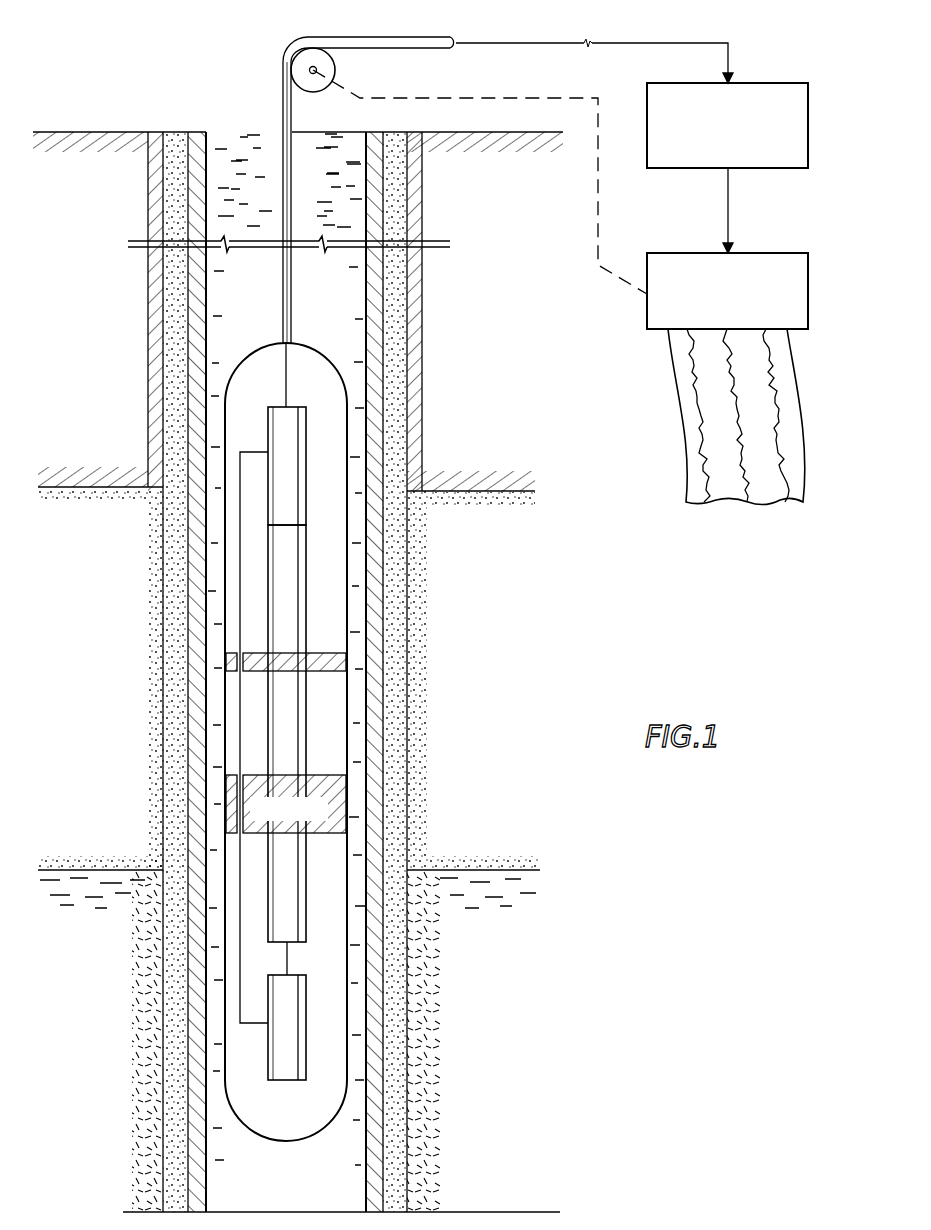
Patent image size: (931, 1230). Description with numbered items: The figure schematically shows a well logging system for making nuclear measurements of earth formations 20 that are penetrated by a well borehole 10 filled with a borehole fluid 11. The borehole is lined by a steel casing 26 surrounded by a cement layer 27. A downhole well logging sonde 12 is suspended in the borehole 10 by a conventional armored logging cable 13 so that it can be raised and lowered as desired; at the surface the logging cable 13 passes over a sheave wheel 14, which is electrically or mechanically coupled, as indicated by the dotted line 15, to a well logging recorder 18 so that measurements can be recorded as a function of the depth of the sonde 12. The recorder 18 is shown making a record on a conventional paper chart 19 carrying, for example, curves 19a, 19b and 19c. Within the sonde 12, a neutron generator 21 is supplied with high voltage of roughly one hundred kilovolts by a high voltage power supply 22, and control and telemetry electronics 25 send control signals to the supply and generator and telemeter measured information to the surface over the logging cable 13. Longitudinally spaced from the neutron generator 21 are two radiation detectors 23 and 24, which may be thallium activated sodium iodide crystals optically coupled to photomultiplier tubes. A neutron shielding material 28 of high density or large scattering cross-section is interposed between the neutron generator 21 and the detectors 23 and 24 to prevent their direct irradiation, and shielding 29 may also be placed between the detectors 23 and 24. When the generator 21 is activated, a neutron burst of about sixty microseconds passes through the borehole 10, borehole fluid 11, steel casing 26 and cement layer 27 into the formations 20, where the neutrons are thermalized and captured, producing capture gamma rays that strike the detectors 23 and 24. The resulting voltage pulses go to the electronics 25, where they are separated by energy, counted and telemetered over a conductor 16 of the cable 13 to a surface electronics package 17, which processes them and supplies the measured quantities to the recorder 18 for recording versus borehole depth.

The well borehole 10 is at (233, 108).
The borehole fluid 11 is at (348, 310).
The downhole well logging sonde 12 is at (225, 410).
The armored logging cable 13 is at (392, 36).
The sheave wheel 14 is at (336, 67).
The dotted line 15 is at (510, 97).
The conductor 16 is at (632, 42).
The surface electronics package 17 is at (783, 82).
The well logging recorder 18 is at (783, 252).
The paper chart 19 is at (704, 444).
The curve 19a is at (698, 405).
The curve 19b is at (710, 468).
The curve 19c is at (782, 485).
The earth formations 20 is at (125, 652).
The neutron generator 21 is at (268, 917).
The high voltage power supply 22 is at (306, 1054).
The radiation detector 23 is at (268, 739).
The radiation detector 24 is at (268, 588).
The control and telemetry electronics 25 is at (306, 437).
The steel casing 26 is at (372, 483).
The cement layer 27 is at (400, 724).
The neutron shielding material 28 is at (347, 797).
The shielding 29 is at (410, 662).